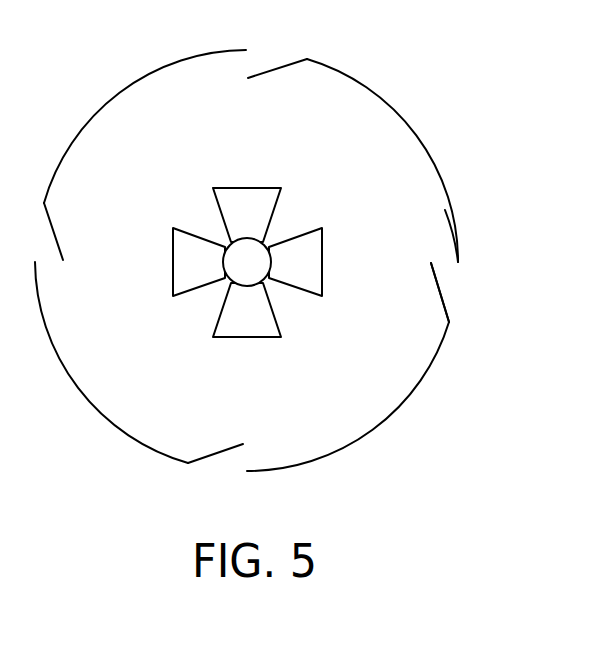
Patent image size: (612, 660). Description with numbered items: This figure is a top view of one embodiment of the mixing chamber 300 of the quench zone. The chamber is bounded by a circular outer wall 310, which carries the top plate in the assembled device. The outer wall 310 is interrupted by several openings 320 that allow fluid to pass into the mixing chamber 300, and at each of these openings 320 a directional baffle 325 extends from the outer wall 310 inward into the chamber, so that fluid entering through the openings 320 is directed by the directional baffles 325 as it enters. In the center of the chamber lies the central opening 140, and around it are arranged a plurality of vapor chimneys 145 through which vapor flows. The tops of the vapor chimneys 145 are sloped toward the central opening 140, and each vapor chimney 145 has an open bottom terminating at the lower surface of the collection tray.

The mixing chamber 300 is at (285, 260).
The outer wall 310 is at (374, 433).
The openings 320 is at (454, 286).
The directional baffles 325 is at (440, 297).
The vapor chimneys 145 is at (248, 188).
The central opening 140 is at (234, 255).